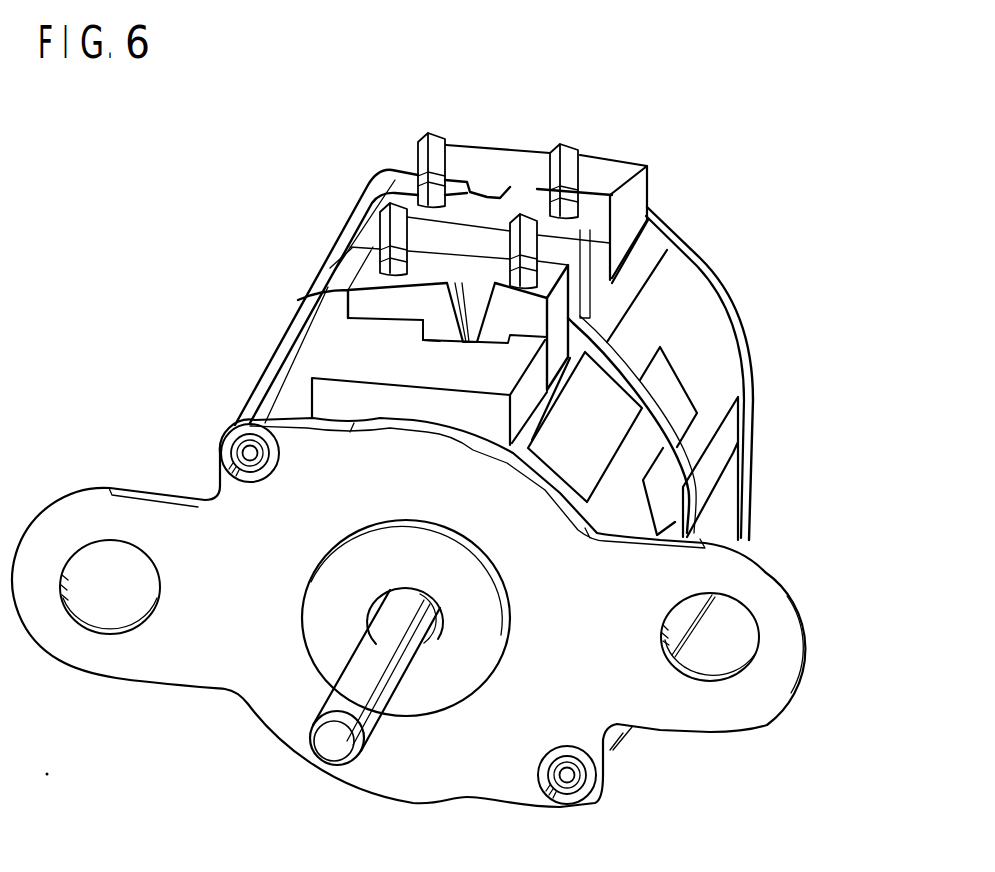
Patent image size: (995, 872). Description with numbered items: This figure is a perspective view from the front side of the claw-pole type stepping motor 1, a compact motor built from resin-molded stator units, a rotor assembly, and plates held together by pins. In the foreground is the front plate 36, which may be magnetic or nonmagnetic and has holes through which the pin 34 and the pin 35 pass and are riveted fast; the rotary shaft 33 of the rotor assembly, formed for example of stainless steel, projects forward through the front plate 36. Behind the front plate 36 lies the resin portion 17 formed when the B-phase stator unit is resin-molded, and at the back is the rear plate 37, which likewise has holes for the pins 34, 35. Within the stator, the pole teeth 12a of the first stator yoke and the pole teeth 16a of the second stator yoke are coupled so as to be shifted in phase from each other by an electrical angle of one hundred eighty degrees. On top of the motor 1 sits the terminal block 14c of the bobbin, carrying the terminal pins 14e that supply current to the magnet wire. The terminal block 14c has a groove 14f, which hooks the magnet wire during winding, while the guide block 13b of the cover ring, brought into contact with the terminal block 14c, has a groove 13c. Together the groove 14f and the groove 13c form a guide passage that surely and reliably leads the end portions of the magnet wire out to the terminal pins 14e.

The claw-pole type stepping motor 1 is at (132, 240).
The pole teeth 12a is at (610, 413).
The guide block 13b is at (630, 158).
The groove 13c is at (438, 332).
The terminal block 14c is at (372, 192).
The terminal pins 14e is at (432, 135).
The groove 14f is at (473, 302).
The pole teeth 16a is at (680, 393).
The resin portion 17 is at (713, 325).
The rotary shaft 33 is at (327, 747).
The pin 34 is at (240, 451).
The pin 35 is at (578, 785).
The front plate 36 is at (787, 607).
The rear plate 37 is at (723, 273).